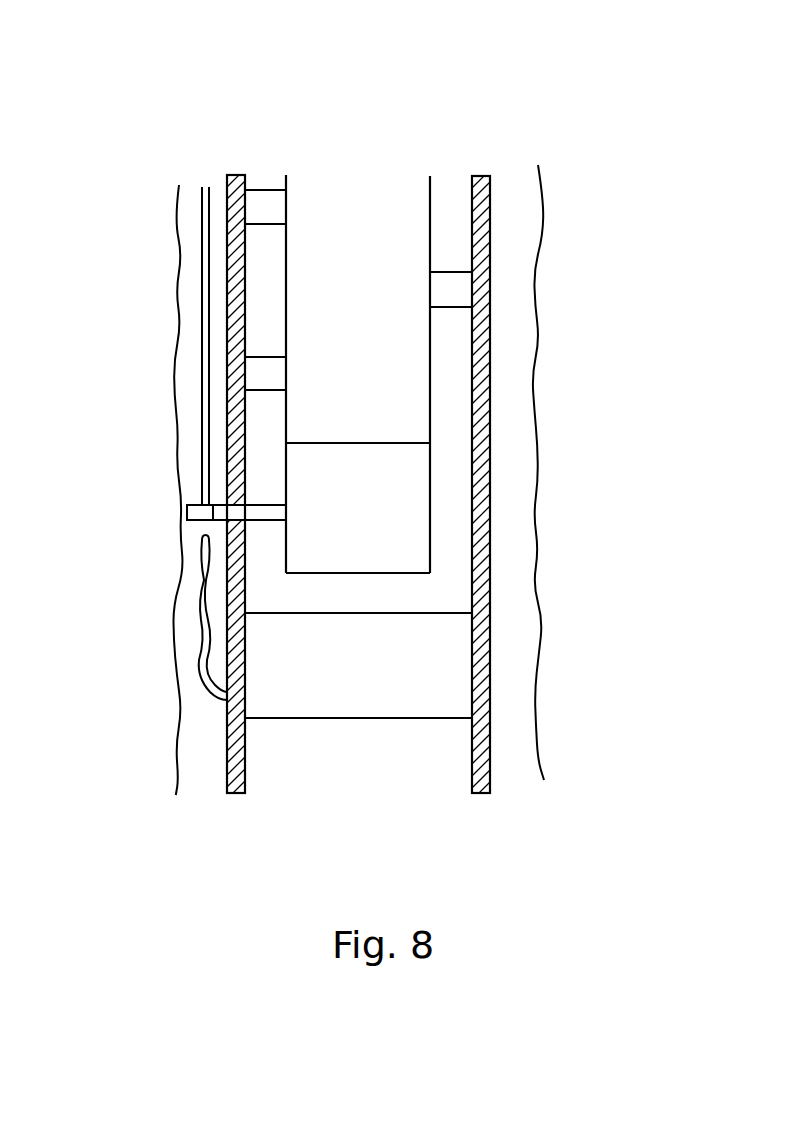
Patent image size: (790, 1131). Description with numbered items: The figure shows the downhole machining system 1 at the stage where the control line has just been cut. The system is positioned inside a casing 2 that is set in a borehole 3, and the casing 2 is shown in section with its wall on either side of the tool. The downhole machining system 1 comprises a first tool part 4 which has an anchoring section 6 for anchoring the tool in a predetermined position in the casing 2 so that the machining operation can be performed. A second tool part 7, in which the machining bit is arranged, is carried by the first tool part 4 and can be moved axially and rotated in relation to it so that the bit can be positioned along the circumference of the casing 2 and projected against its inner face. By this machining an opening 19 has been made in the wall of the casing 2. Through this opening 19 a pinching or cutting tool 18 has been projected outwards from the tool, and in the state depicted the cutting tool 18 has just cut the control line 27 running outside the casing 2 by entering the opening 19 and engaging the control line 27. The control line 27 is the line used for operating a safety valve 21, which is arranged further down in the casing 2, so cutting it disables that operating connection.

The downhole machining system 1 is at (625, 90).
The casing 2 is at (485, 233).
The borehole 3 is at (520, 190).
The first tool part 4 is at (400, 372).
The anchoring section 6 is at (460, 288).
The second tool part 7 is at (405, 515).
The pinching or cutting tool 18 is at (198, 512).
The opening 19 is at (224, 504).
The safety valve 21 is at (455, 671).
The control line 27 is at (205, 305).